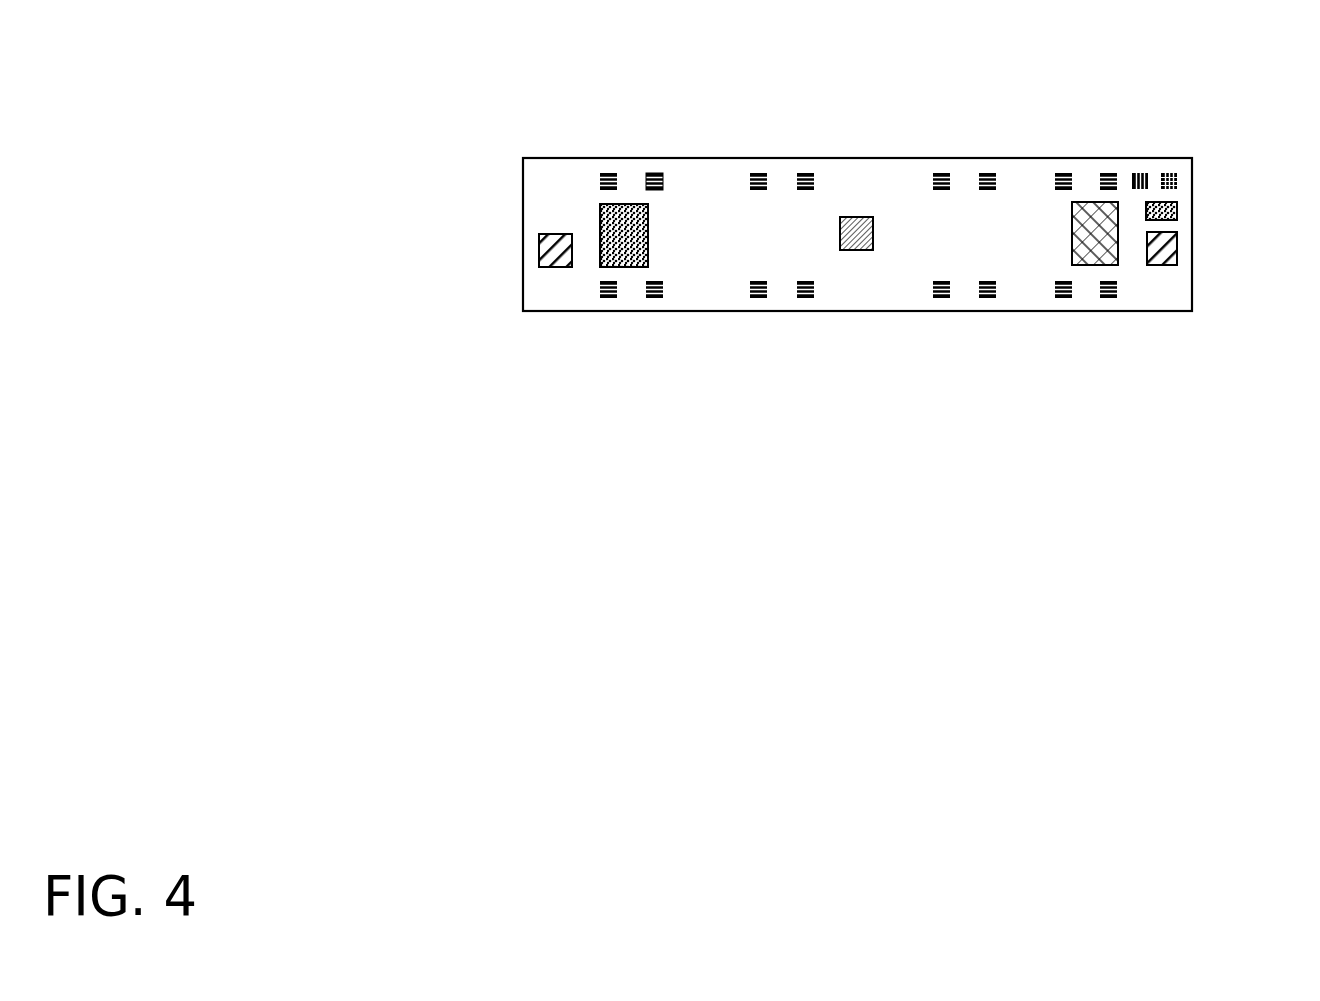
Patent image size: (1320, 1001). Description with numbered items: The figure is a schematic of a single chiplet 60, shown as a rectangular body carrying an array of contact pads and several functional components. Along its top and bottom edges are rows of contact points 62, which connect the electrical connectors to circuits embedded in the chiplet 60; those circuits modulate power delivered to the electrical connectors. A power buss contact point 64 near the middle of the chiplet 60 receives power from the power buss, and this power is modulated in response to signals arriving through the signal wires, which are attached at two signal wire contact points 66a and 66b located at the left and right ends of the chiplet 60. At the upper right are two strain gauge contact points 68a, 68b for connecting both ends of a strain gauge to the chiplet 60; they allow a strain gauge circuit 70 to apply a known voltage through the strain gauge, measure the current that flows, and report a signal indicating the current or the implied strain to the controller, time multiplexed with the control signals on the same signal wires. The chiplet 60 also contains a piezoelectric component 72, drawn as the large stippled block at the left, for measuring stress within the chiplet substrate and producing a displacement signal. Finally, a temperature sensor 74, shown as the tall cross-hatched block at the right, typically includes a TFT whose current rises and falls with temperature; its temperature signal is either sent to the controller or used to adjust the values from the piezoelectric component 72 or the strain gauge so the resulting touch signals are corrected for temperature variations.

The chiplet 60 is at (720, 158).
The contact points 62 is at (648, 175).
The power buss contact point 64 is at (855, 218).
The signal wire contact point 66a is at (550, 234).
The signal wire contact point 66b is at (1177, 264).
The strain gauge contact point 68a is at (1165, 175).
The strain gauge contact point 68b is at (1135, 175).
The strain gauge circuit 70 is at (1177, 203).
The piezoelectric component 72 is at (600, 205).
The temperature sensor 74 is at (1072, 203).